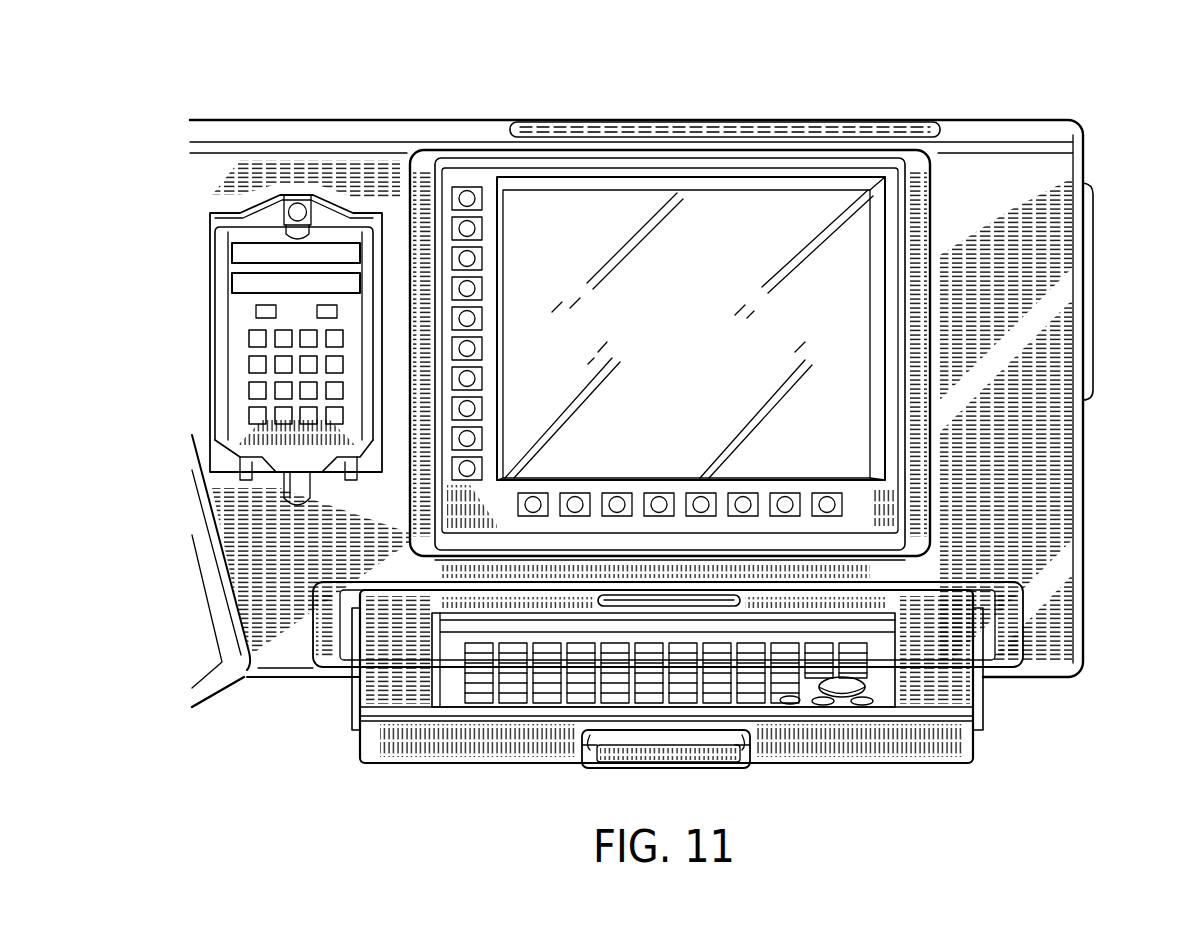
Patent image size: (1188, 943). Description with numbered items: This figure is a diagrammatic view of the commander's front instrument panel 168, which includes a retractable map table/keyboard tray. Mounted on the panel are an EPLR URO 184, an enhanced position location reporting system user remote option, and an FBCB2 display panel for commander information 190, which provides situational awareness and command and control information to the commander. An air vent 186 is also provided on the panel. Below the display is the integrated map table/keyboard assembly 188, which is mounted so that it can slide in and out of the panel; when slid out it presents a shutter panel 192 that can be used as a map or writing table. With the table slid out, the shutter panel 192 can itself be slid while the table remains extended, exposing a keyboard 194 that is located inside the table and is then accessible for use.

The commander's front instrument panel 168 is at (406, 86).
The EPLR URO 184 is at (196, 308).
The air vent 186 is at (1093, 255).
The integrated map table/keyboard assembly 188 is at (447, 742).
The FBCB2 display panel 190 is at (951, 183).
The shutter panel 192 is at (880, 604).
The keyboard 194 is at (876, 688).